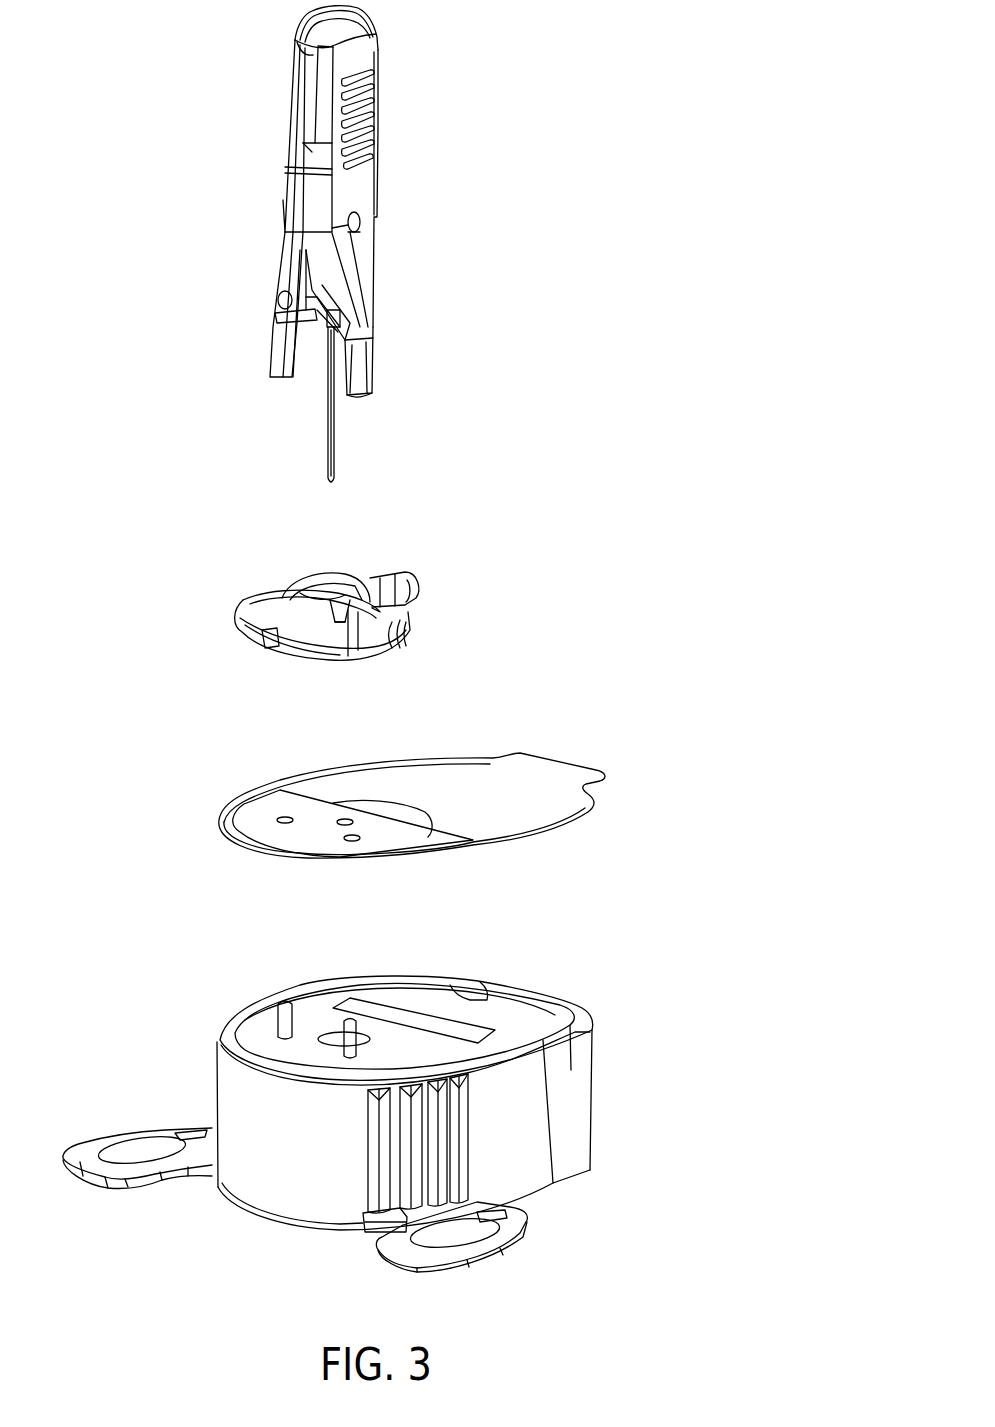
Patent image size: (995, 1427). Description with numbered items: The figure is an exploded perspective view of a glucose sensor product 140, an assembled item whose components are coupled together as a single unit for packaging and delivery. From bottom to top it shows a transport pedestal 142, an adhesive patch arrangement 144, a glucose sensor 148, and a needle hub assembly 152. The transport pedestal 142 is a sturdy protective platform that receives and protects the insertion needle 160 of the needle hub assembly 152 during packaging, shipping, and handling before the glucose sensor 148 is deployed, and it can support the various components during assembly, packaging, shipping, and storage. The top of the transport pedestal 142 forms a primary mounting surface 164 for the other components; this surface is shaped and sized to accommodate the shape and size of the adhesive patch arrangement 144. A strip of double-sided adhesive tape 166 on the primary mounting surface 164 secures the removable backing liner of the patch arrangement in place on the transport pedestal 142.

The glucose sensor product 140 is at (660, 274).
The transport pedestal 142 is at (598, 1132).
The adhesive patch arrangement 144 is at (592, 808).
The glucose sensor 148 is at (254, 597).
The needle hub assembly 152 is at (379, 53).
The insertion needle 160 is at (337, 443).
The primary mounting surface 164 is at (512, 1013).
The strip of double-sided adhesive tape 166 is at (372, 1005).